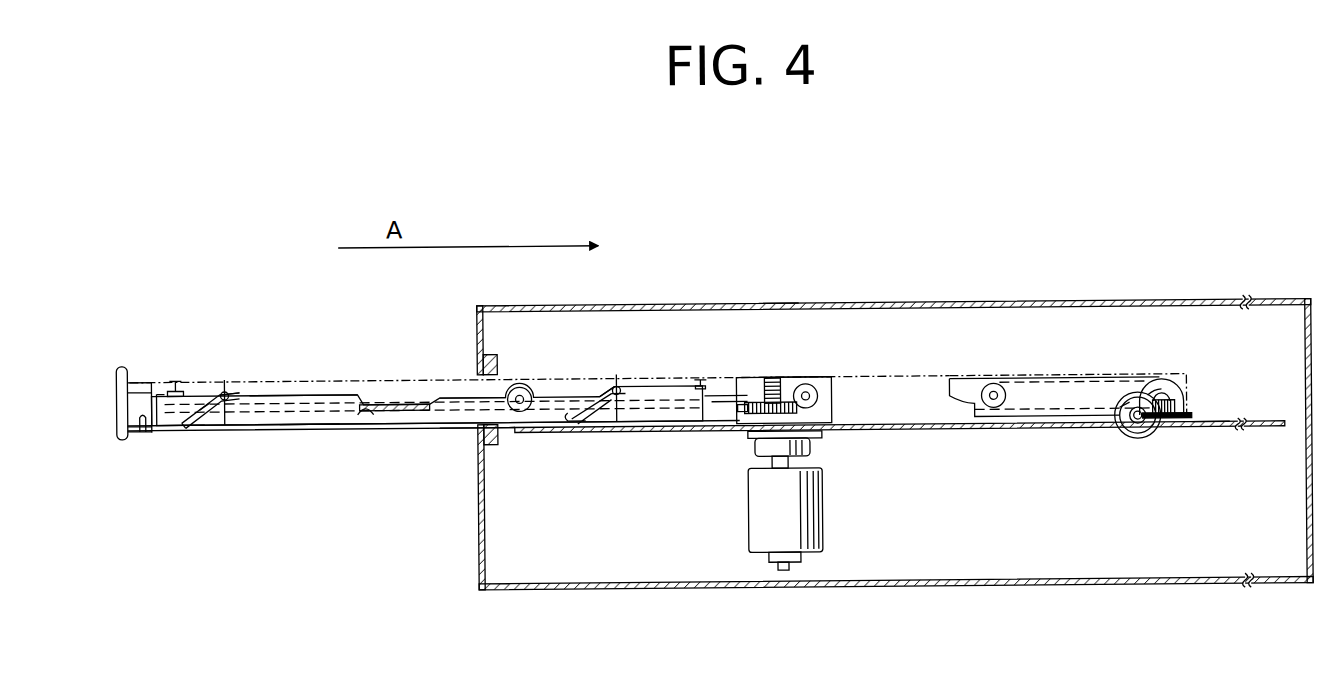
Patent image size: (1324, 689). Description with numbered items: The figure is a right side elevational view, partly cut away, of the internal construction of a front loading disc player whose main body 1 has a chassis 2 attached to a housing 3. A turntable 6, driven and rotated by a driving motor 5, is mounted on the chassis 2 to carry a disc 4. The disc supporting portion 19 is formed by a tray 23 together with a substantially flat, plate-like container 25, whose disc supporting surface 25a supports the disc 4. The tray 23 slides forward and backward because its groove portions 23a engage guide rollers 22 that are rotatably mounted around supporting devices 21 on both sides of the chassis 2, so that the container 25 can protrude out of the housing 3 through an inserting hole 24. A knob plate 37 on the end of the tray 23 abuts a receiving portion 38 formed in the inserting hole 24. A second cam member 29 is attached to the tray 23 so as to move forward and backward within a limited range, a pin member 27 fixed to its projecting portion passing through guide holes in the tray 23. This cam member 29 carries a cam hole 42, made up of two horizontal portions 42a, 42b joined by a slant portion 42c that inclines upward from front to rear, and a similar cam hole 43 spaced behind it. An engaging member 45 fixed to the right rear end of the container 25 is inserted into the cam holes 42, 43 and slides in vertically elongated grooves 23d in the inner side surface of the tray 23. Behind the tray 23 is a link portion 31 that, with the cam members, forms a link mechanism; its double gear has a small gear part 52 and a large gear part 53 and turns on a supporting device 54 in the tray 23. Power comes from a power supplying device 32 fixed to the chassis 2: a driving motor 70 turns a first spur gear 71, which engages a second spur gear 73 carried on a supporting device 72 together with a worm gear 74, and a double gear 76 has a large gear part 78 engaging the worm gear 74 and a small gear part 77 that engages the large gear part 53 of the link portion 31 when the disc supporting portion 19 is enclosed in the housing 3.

The main body 1 is at (730, 268).
The chassis 2 is at (1268, 432).
The housing 3 is at (937, 301).
The disc 4 is at (390, 398).
The driving motor 5 is at (823, 526).
The turntable 6 is at (833, 441).
The disc supporting portion 19 is at (305, 432).
The supporting devices 21 is at (526, 393).
The guide rollers 22 is at (520, 384).
The tray 23 is at (346, 378).
The groove portions 23a is at (148, 425).
The grooves 23d is at (620, 408).
The inserting hole 24 is at (456, 429).
The container 25 is at (320, 390).
The disc supporting surface 25a is at (364, 416).
The pin member 27 is at (177, 375).
The second cam member 29 is at (388, 423).
The link portion 31 is at (771, 368).
The power supplying device 32 is at (1223, 367).
The knob plate 37 is at (122, 367).
The receiving portion 38 is at (482, 357).
The cam hole 42 is at (206, 421).
The horizontal portion 42a is at (192, 419).
The horizontal portion 42b is at (232, 400).
The slant portion 42c is at (225, 420).
The cam hole 43 is at (586, 414).
The engaging member 45 is at (228, 387).
The small gear part 52 is at (740, 426).
The large gear part 53 is at (757, 414).
The supporting device 54 is at (773, 381).
The driving motor 70 is at (1170, 385).
The first spur gear 71 is at (1152, 397).
The supporting device 72 is at (1146, 432).
The second spur gear 73 is at (1130, 413).
The worm gear 74 is at (1140, 421).
The double gear 76 is at (1197, 419).
The small gear part 77 is at (1190, 407).
The large gear part 78 is at (1180, 423).